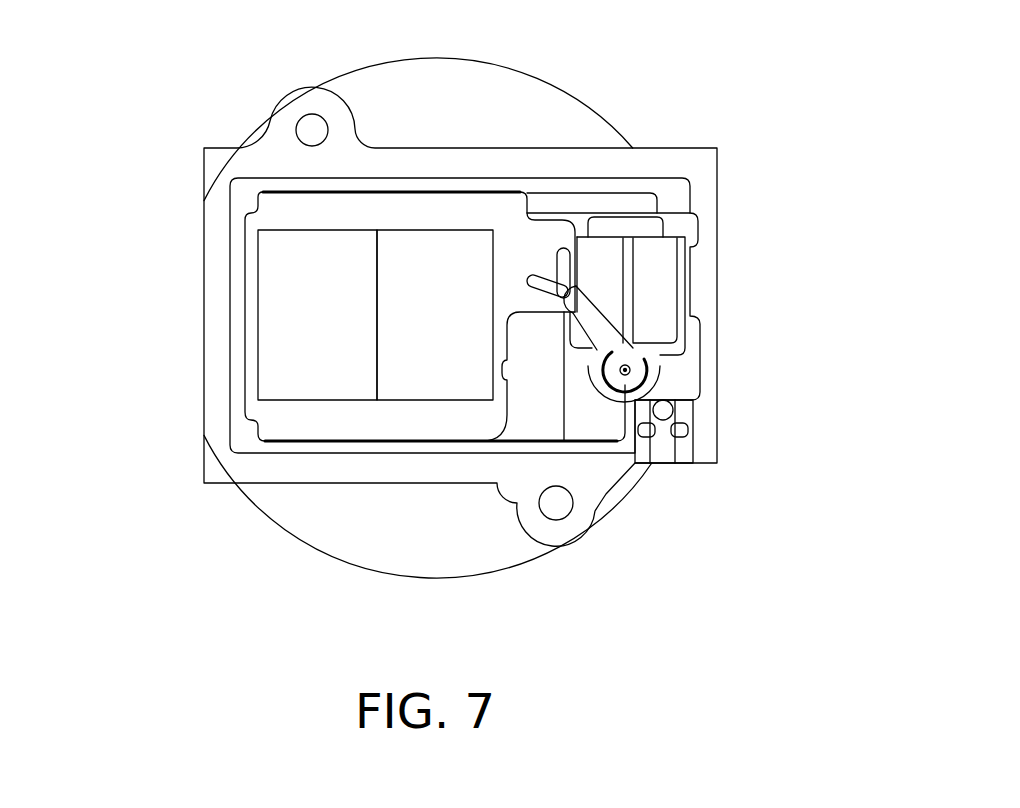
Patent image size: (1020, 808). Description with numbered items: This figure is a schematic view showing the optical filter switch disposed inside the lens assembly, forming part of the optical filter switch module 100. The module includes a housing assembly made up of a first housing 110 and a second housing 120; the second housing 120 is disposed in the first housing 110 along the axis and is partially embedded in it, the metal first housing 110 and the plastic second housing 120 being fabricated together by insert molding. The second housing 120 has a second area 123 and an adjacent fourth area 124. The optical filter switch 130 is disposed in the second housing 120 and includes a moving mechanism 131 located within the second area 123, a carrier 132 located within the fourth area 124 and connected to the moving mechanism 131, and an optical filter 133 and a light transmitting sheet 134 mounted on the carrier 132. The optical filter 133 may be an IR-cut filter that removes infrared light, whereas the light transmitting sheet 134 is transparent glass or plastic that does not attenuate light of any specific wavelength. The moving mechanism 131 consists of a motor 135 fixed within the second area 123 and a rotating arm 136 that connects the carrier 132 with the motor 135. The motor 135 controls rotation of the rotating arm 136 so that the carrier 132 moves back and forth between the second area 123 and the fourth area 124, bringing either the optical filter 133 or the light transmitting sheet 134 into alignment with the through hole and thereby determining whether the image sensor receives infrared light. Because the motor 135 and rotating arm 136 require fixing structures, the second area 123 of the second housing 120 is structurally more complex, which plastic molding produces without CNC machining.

The optical filter switch module 100 is at (210, 84).
The first housing 110 is at (577, 100).
The second housing 120 is at (710, 170).
The second area 123 is at (583, 408).
The fourth area 124 is at (532, 395).
The optical filter switch 130 is at (473, 419).
The moving mechanism 131 is at (735, 558).
The carrier 132 is at (287, 428).
The optical filter 133 is at (313, 383).
The light transmitting sheet 134 is at (428, 378).
The motor 135 is at (667, 332).
The rotating arm 136 is at (627, 378).